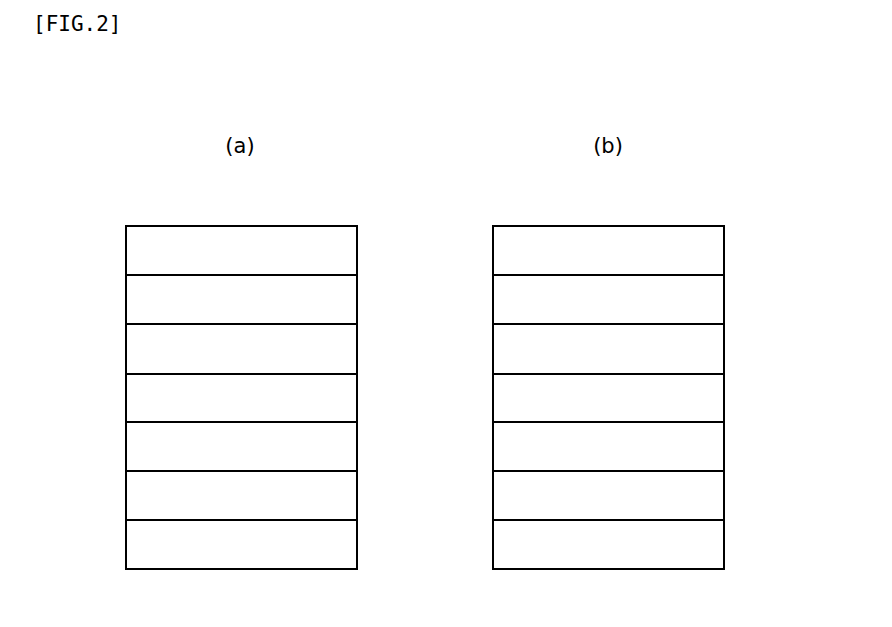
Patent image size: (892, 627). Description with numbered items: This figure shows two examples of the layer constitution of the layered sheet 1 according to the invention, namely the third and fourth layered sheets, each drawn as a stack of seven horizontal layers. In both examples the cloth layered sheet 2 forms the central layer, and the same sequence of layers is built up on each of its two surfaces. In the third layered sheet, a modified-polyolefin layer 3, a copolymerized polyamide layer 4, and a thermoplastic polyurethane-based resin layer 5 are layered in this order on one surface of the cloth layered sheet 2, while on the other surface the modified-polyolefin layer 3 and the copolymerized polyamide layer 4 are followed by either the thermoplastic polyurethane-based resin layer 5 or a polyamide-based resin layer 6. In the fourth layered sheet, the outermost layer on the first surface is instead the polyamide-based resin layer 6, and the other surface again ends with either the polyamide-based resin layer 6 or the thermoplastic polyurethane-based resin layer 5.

The layered sheet 1 is at (352, 210).
The cloth layered sheet 2 is at (338, 404).
The modified-polyolefin layer 3 is at (338, 355).
The copolymerized polyamide layer 4 is at (338, 306).
The thermoplastic polyurethane-based resin layer 5 is at (338, 257).
The polyamide-based resin layer 6 is at (705, 257).